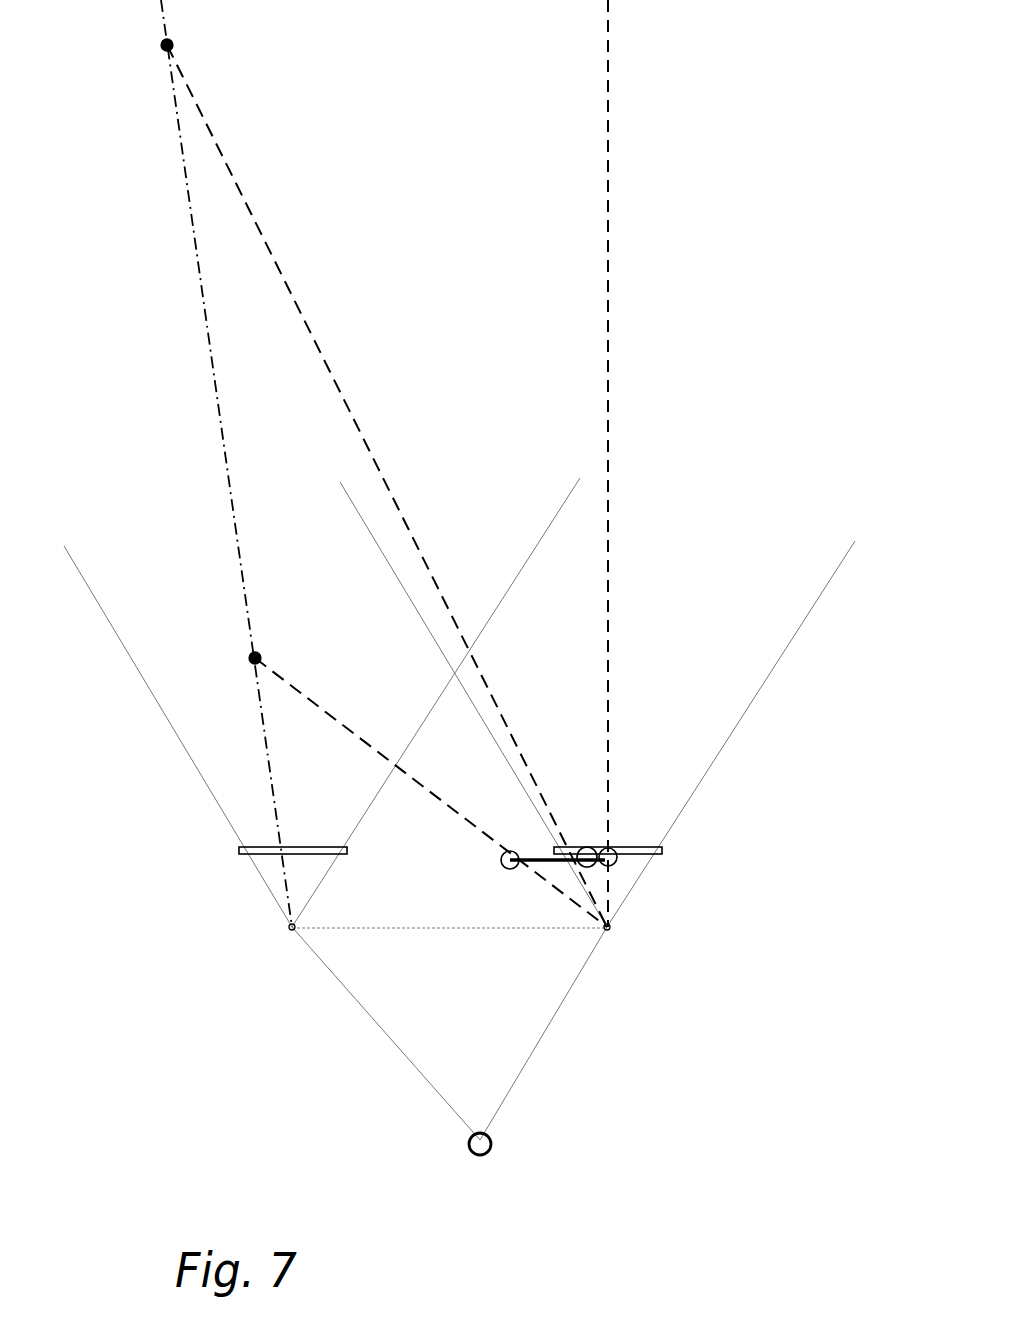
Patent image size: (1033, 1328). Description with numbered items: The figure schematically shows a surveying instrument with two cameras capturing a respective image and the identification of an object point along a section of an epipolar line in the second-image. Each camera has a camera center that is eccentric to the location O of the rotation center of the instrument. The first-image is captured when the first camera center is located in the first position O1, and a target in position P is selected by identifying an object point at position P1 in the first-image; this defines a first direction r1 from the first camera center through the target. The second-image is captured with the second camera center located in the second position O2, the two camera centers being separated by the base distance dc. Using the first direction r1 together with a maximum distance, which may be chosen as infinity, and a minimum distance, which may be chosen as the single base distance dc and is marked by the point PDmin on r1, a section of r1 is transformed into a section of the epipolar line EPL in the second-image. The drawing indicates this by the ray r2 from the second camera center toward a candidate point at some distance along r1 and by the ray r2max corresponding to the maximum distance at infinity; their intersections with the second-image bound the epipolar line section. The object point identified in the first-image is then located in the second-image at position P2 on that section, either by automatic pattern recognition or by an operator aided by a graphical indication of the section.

The target position P is at (190, 46).
The point at minimum distance Dmin PDmin is at (378, 761).
The first direction r' r1 is at (226, 463).
The second-camera ray r'' for distance d r2 is at (387, 486).
The second-camera ray r'' for d = Dmax = inf r2max is at (747, 463).
The first image first-image is at (252, 861).
The second image second-image is at (664, 861).
The first camera center position O' O1 is at (280, 946).
The second camera center position O'' O2 is at (637, 941).
The rotation center location O is at (491, 1144).
The camera base distance dc is at (452, 964).
The epipolar line EPL is at (540, 872).
The object point position P'(x', y') in first image P1 is at (266, 867).
The object point position P''(x'', y'') in second image P2 is at (612, 873).